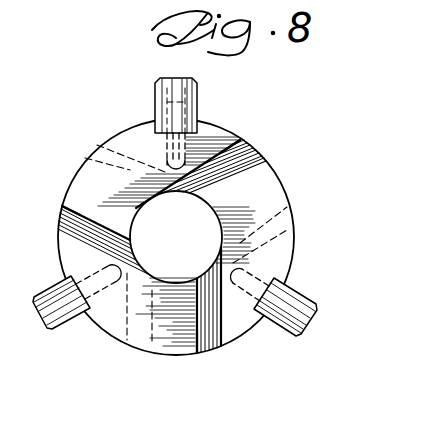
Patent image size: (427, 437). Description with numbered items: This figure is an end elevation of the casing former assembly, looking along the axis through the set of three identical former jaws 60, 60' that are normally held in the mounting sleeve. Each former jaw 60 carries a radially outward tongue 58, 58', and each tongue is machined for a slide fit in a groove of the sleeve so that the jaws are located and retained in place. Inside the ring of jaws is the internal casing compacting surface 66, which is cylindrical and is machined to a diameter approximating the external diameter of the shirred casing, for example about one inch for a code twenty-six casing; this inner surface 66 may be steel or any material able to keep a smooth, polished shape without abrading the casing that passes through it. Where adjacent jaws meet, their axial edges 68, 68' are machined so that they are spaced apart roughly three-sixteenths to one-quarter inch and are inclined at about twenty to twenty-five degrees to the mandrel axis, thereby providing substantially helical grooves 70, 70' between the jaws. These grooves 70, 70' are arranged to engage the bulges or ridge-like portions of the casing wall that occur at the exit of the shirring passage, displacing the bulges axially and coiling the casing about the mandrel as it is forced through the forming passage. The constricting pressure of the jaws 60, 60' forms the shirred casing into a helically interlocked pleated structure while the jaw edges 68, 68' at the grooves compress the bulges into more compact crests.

The tongue 58 is at (68, 293).
The tongue 58' is at (201, 123).
The former jaw 60 is at (176, 245).
The former jaw 60' is at (161, 156).
The internal casing compacting surface 66 is at (212, 216).
The axial edge 68 is at (142, 230).
The axial edge 68' is at (138, 261).
The helical groove 70 is at (49, 218).
The helical groove 70' is at (259, 143).